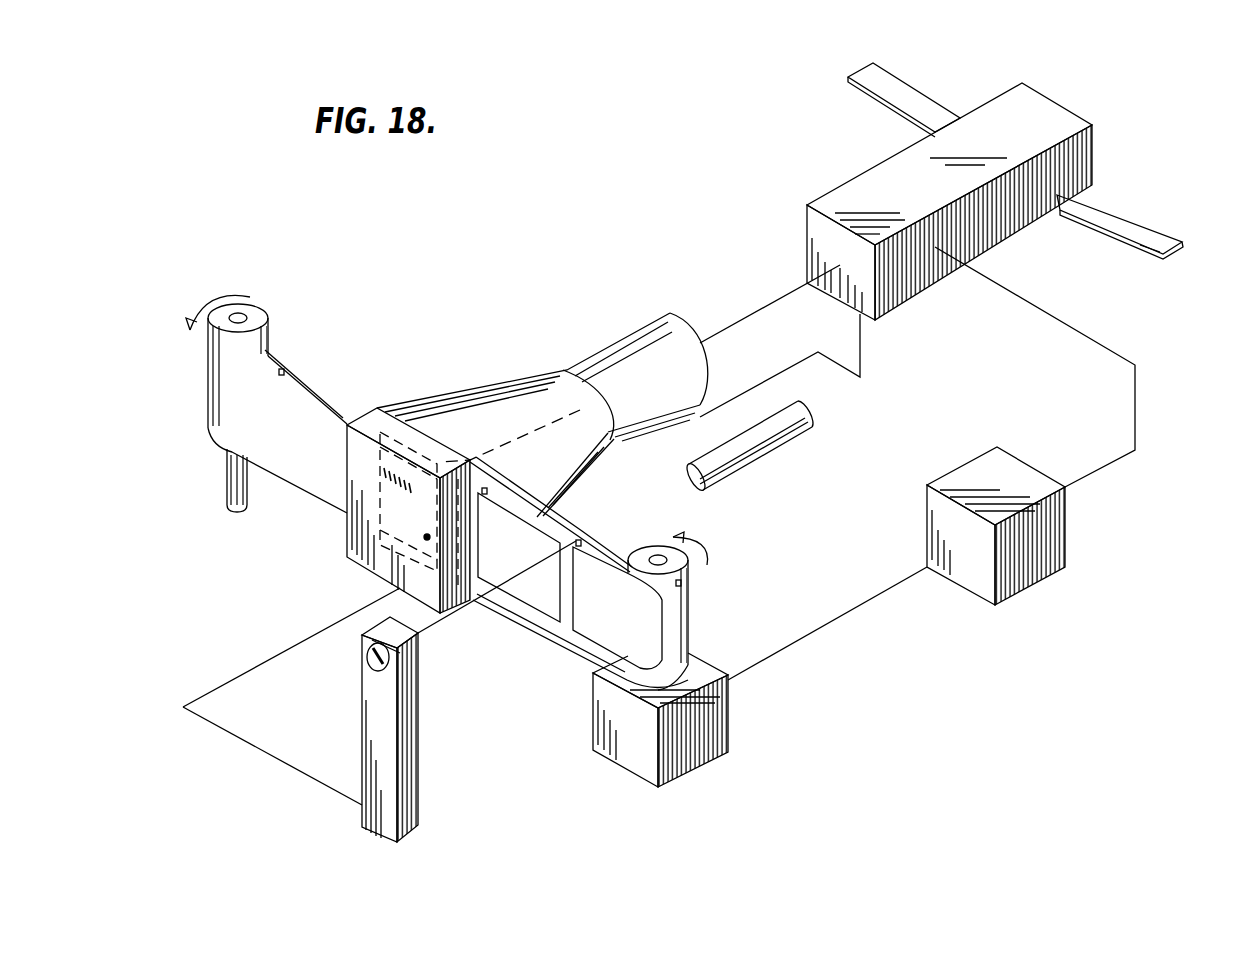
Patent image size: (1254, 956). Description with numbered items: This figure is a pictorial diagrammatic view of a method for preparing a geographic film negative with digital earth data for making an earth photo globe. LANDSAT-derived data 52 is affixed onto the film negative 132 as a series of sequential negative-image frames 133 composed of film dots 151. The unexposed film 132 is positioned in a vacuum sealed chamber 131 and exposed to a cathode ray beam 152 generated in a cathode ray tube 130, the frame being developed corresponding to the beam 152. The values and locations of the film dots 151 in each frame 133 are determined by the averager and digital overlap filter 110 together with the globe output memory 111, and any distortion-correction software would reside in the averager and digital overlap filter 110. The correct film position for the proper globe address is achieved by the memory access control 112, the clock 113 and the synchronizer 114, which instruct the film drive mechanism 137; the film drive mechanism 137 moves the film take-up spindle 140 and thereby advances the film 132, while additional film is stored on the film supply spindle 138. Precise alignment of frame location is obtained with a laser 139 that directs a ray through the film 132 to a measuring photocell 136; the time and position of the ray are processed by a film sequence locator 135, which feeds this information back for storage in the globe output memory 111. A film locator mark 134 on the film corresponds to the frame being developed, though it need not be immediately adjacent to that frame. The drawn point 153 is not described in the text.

The data 52 is at (1120, 203).
The averager and digital overlap filter 110 is at (1058, 103).
The globe output memory 111 is at (984, 191).
The memory access control 112 is at (1065, 528).
The clock 113 is at (1033, 526).
The synchronizer 114 is at (1033, 526).
The cathode ray tube 130 is at (598, 343).
The vacuum sealed chamber 131 is at (345, 549).
The film negative 132 is at (330, 395).
The negative-image frame 133 is at (521, 600).
The film locator mark 134 is at (284, 370).
The film sequence locator 135 is at (423, 772).
The measuring photocell 136 is at (363, 655).
The film drive mechanism 137 is at (730, 713).
The film supply spindle 138 is at (222, 480).
The laser 139 is at (742, 466).
The film take-up spindle 140 is at (693, 612).
The film dots 151 is at (389, 489).
The cathode ray beam 152 is at (498, 445).
The sensor point 153 is at (424, 539).